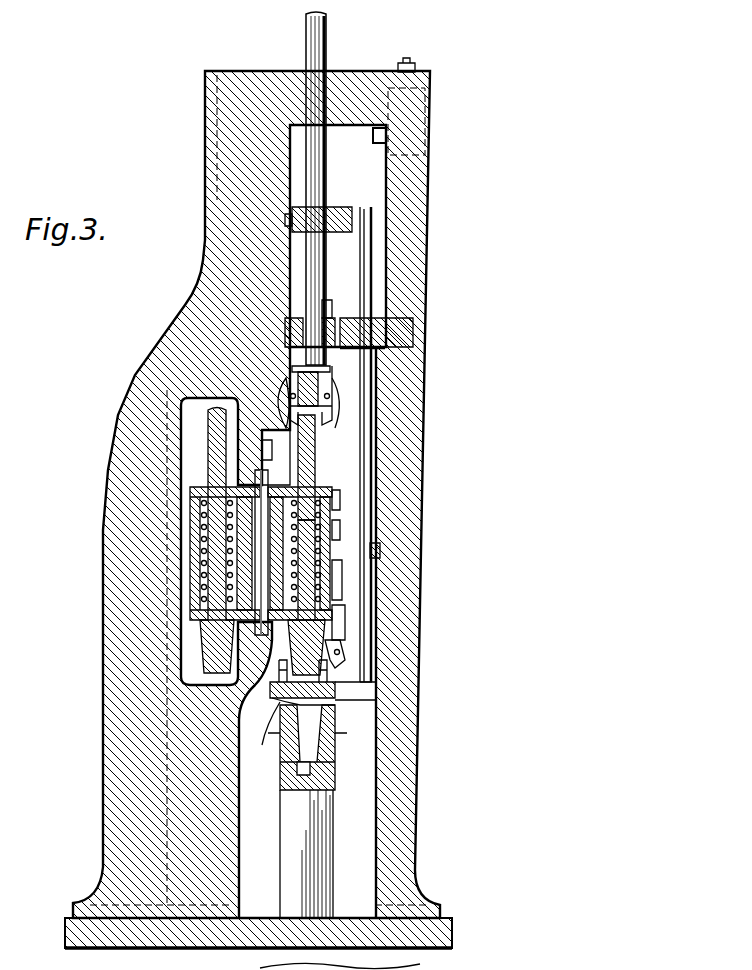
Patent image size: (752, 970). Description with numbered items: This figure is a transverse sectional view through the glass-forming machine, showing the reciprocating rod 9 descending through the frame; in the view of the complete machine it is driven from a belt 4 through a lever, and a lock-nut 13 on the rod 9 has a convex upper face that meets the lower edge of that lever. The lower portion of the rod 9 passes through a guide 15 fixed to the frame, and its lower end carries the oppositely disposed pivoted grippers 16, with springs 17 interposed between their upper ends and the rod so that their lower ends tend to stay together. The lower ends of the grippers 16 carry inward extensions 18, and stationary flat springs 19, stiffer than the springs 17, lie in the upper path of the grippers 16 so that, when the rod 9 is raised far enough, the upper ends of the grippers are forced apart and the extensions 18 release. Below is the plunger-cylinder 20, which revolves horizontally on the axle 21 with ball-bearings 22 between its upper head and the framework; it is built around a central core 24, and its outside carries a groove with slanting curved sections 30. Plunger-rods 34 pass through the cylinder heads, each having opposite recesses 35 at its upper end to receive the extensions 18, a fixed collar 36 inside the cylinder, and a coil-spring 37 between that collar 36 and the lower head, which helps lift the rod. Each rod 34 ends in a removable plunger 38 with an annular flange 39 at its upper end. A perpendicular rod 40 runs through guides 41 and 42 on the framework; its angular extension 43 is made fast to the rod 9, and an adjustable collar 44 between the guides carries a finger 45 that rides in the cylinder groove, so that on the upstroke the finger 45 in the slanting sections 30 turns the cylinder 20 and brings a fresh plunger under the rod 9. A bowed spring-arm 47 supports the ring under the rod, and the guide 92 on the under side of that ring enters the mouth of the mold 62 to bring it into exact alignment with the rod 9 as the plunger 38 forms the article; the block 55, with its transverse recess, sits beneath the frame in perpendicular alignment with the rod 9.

The belt 4 is at (160, 670).
The rod 9 is at (330, 188).
The lock-nut 13 is at (122, 613).
The guide 15 is at (335, 318).
The grippers 16 is at (334, 430).
The springs 17 is at (332, 372).
The inward extensions 18 is at (268, 395).
The flat springs 19 is at (333, 400).
The plunger-cylinder 20 is at (192, 535).
The axle 21 is at (200, 578).
The ball-bearings 22 is at (205, 470).
The central core 24 is at (200, 601).
The slanting curved sections 30 is at (195, 560).
The plunger-rods 34 is at (317, 473).
The recesses 35 is at (318, 448).
The fixed collar 36 is at (342, 500).
The coil-spring 37 is at (342, 530).
The plunger 38 is at (345, 650).
The annular flange 39 is at (347, 612).
The perpendicular rod 40 is at (373, 290).
The guide 41 is at (405, 333).
The guide 42 is at (337, 688).
The angular extension 43 is at (350, 222).
The adjustable collar 44 is at (382, 551).
The finger 45 is at (344, 580).
The spring-arm 47 is at (337, 696).
The block 55 is at (300, 843).
The mold 62 is at (337, 722).
The guide 92 is at (261, 733).